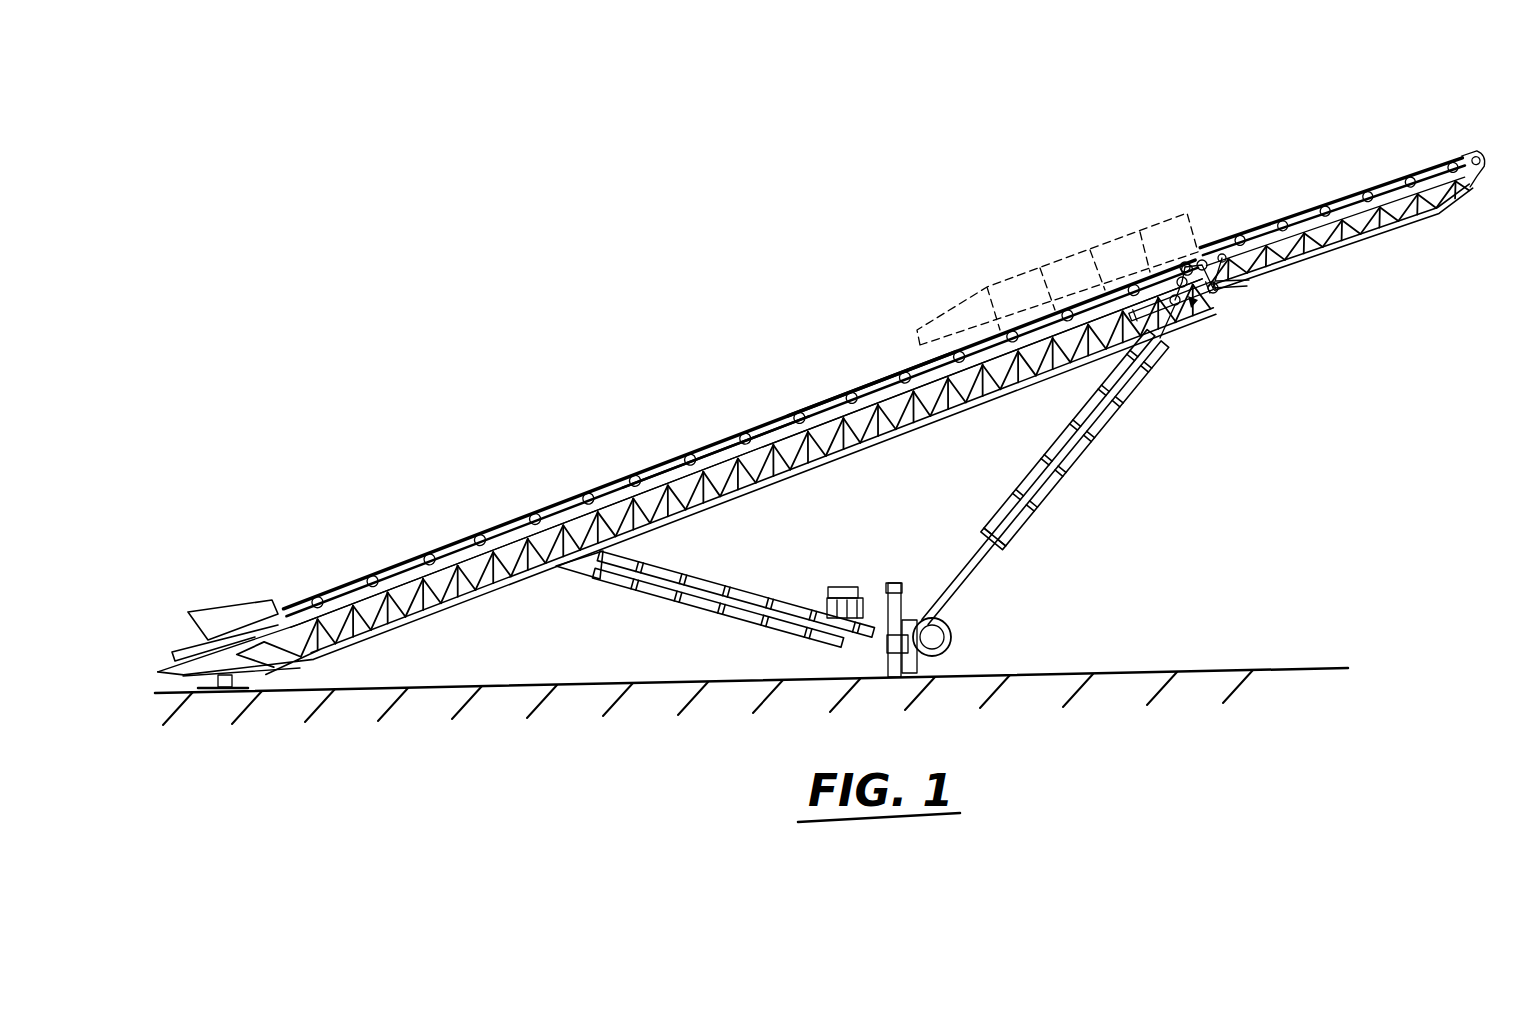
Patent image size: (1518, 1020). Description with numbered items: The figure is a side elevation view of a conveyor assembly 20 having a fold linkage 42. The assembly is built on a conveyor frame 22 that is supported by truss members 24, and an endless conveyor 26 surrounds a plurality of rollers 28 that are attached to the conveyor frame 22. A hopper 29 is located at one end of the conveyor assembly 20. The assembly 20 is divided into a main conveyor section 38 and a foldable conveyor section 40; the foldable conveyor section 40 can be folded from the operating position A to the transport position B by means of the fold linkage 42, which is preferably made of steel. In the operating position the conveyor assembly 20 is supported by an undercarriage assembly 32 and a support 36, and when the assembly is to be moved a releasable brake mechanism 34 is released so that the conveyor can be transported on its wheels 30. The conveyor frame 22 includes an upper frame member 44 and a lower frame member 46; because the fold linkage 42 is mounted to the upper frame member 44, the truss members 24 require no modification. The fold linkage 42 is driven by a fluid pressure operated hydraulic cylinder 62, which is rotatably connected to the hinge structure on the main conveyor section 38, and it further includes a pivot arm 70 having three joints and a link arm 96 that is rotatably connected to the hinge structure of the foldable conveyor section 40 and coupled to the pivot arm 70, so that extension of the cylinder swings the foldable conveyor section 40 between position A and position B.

The conveyor assembly 20 is at (793, 278).
The conveyor frame 22 is at (828, 462).
The truss members 24 is at (988, 396).
The endless conveyor 26 is at (566, 502).
The rollers 28 is at (612, 496).
The hopper 29 is at (235, 602).
The wheels 30 is at (955, 634).
The undercarriage assembly 32 is at (792, 578).
The releasable brake mechanism 34 is at (882, 648).
The support 36 is at (300, 670).
The main conveyor section 38 is at (834, 396).
The foldable conveyor section 40 is at (1303, 212).
The fold linkage 42 is at (1218, 234).
The upper frame member 44 is at (880, 390).
The lower frame member 46 is at (912, 420).
The hydraulic cylinder 62 is at (1165, 322).
The pivot arm 70 is at (1198, 312).
The link arm 96 is at (1248, 290).
The operating position A is at (1433, 160).
The transport position B is at (1081, 255).